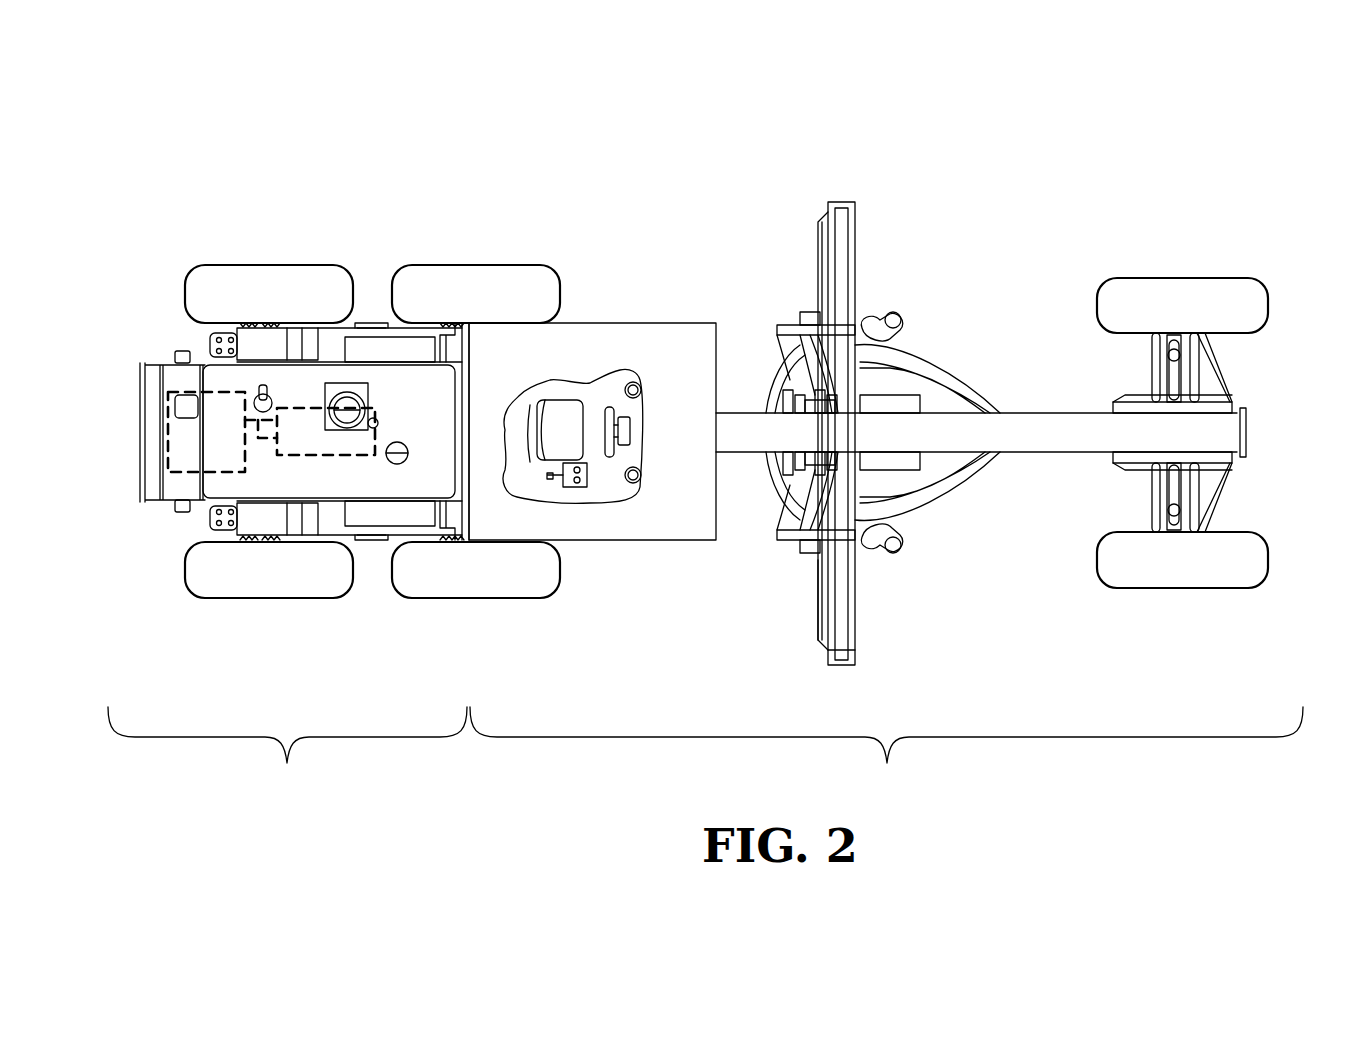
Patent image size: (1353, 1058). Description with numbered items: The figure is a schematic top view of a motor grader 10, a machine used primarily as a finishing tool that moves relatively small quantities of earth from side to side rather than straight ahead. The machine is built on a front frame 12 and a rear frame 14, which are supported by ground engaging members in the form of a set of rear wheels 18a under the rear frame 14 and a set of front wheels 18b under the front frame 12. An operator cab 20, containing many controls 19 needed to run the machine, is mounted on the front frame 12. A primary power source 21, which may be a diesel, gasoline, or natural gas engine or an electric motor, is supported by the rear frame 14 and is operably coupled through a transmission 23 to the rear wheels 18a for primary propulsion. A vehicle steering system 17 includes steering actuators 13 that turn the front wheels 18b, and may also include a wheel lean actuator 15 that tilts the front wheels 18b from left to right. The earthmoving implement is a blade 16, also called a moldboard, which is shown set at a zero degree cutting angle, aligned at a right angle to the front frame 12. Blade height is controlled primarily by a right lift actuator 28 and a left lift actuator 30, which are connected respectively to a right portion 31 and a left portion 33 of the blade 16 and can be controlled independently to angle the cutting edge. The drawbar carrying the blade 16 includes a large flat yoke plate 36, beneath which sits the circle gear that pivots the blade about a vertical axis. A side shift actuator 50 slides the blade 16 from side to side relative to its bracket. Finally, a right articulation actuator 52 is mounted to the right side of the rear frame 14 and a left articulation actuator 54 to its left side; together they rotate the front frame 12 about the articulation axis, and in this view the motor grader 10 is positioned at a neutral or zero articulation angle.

The motor grader 10 is at (650, 142).
The front frame 12 is at (886, 754).
The steering actuators 13 is at (1168, 355).
The rear frame 14 is at (287, 754).
The wheel lean actuator 15 is at (1230, 495).
The blade 16 is at (855, 223).
The vehicle steering system 17 is at (1230, 358).
The rear wheels 18a is at (253, 280).
The front wheels 18b is at (1200, 292).
The controls 19 is at (630, 370).
The operator cab 20 is at (676, 323).
The primary power source 21 is at (178, 385).
The transmission 23 is at (315, 400).
The right lift actuator 28 is at (897, 548).
The left lift actuator 30 is at (897, 322).
The right portion of the blade 31 is at (866, 611).
The left portion of the blade 33 is at (866, 252).
The yoke plate 36 is at (935, 347).
The side shift actuator 50 is at (818, 574).
The right articulation actuator 52 is at (375, 547).
The left articulation actuator 54 is at (375, 318).